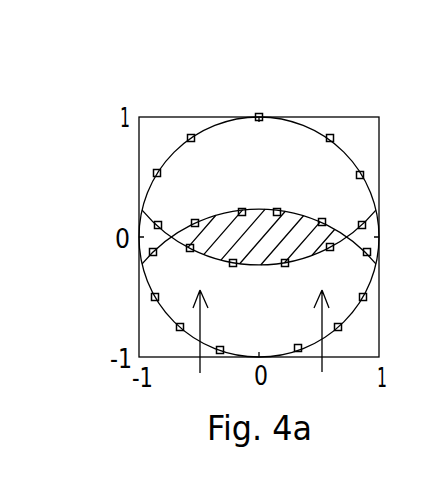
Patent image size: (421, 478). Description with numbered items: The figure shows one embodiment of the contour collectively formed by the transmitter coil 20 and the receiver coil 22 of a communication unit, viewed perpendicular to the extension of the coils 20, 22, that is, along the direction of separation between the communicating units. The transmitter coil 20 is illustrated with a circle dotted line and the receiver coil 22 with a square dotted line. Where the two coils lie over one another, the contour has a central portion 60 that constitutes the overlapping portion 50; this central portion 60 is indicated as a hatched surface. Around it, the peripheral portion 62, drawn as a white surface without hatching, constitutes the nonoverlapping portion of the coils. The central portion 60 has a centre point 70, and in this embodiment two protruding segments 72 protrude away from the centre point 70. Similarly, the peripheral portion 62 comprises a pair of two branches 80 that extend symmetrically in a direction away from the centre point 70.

The transmitter coil 20 is at (150, 297).
The receiver coil 22 is at (304, 120).
The overlapping portion 50 is at (293, 235).
The central portion 60 is at (276, 162).
The peripheral portion 62 is at (202, 178).
The centre point 70 is at (266, 232).
The protruding segments 72 is at (264, 346).
The branches 80 is at (233, 160).